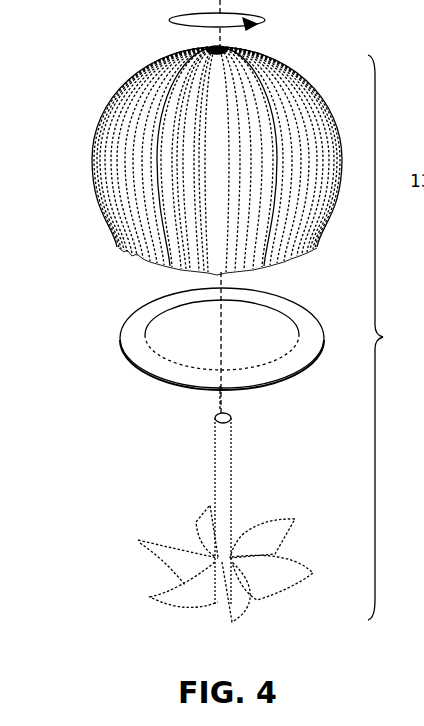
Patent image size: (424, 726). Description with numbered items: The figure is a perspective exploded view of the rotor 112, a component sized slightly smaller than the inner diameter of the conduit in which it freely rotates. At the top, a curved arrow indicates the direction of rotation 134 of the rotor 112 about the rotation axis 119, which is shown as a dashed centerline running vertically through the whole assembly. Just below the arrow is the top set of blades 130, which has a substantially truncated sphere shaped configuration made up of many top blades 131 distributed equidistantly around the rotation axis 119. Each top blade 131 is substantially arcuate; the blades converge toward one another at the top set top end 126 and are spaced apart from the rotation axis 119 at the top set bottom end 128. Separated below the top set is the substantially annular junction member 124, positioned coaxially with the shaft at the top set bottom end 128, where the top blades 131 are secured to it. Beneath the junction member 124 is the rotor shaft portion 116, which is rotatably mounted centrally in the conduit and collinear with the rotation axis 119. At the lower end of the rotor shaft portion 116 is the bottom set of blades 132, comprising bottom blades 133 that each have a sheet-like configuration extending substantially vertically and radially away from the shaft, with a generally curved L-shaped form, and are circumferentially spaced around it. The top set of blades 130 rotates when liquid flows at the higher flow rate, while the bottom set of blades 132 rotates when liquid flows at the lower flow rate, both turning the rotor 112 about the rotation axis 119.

The rotor 112 is at (396, 337).
The rotor shaft portion 116 is at (223, 451).
The rotation axis 119 is at (225, 402).
The annular junction member 124 is at (143, 332).
The top set top end 126 is at (140, 64).
The top set bottom end 128 is at (150, 262).
The top set of blades 130 is at (305, 66).
The top blades 131 is at (150, 197).
The bottom set of blades 132 is at (252, 612).
The bottom blades 133 is at (165, 605).
The direction of rotation 134 is at (170, 26).